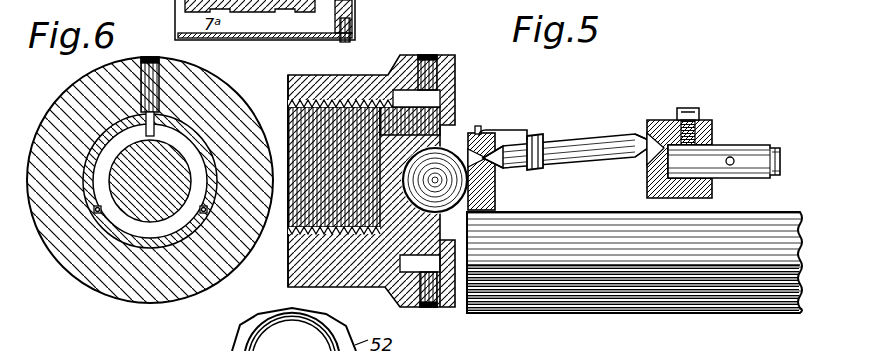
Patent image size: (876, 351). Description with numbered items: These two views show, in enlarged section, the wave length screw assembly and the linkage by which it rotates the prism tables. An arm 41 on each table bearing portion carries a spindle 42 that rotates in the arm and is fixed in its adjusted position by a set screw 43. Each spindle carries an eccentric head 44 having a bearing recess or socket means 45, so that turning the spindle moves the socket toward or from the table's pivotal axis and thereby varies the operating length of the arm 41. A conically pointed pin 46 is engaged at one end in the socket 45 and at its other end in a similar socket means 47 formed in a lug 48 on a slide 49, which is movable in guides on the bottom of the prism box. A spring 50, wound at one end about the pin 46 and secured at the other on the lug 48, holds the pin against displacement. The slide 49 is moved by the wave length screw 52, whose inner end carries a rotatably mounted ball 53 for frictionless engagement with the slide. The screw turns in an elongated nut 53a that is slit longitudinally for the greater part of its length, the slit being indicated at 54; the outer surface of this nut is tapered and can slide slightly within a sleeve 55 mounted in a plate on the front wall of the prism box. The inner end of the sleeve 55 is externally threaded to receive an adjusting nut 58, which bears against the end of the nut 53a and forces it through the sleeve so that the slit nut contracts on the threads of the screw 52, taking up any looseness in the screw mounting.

In FIG. 5, the arm 41 is at (710, 124).
In FIG. 5, the spindle 42 is at (742, 143).
In FIG. 5, the set screw 43 is at (706, 108).
In FIG. 5, the head 44 is at (652, 122).
In FIG. 5, the bearing recess or socket means 45 is at (632, 137).
In FIG. 5, the conically pointed pin 46 is at (569, 137).
In FIG. 5, the socket means 47 is at (503, 165).
In FIG. 5, the lug 48 is at (495, 180).
In FIG. 5, the slide 49 is at (615, 255).
In FIG. 5, the spring 50 is at (514, 130).
In FIG. 6, the wave length screw 52 is at (148, 210).
In FIG. 5, the wave length screw 52 is at (352, 138).
In FIG. 5, the ball 53 is at (500, 146).
In FIG. 6, the elongated nut 53a is at (190, 128).
In FIG. 5, the elongated nut 53a is at (290, 248).
In FIG. 6, the slit 54 is at (170, 118).
In FIG. 5, the slit 54 is at (428, 107).
In FIG. 6, the sleeve 55 is at (90, 268).
In FIG. 5, the sleeve 55 is at (322, 280).
In FIG. 5, the adjusting nut 58 is at (366, 280).